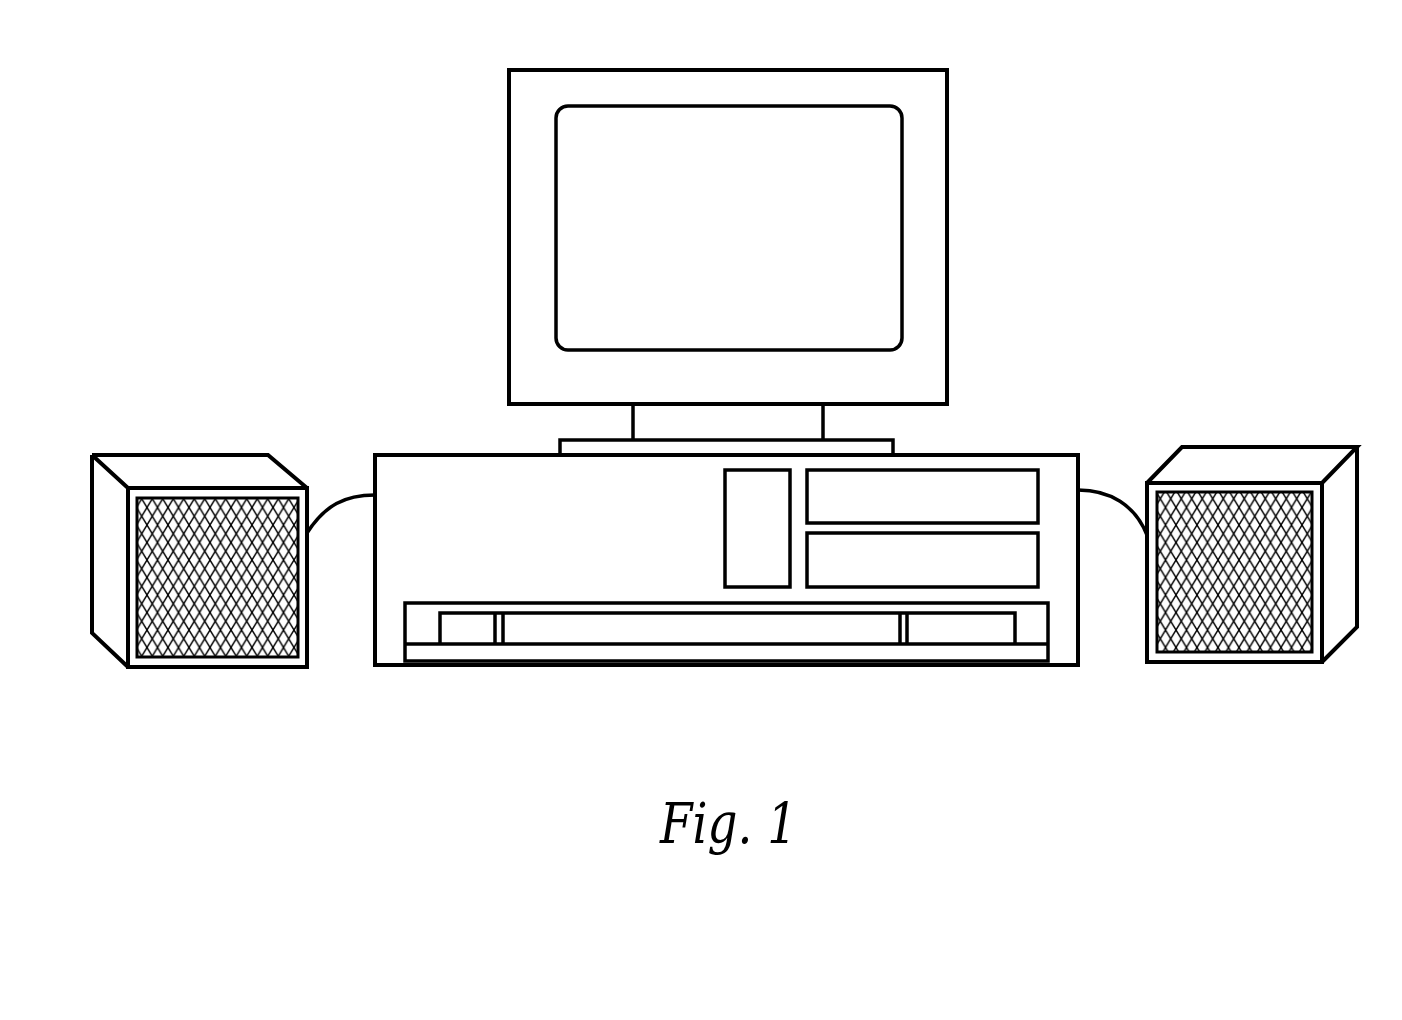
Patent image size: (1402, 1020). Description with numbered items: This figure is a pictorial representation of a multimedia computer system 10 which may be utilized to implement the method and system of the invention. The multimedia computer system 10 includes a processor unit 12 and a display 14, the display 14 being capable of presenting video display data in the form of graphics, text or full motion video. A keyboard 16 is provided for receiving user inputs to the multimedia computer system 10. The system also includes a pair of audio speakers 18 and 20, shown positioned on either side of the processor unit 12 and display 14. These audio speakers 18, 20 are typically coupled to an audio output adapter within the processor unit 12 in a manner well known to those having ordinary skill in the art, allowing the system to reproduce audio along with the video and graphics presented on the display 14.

The multimedia computer system 10 is at (731, 396).
The processor unit 12 is at (728, 556).
The display 14 is at (509, 222).
The keyboard 16 is at (862, 667).
The audio speaker 18 is at (133, 452).
The audio speaker 20 is at (1315, 443).